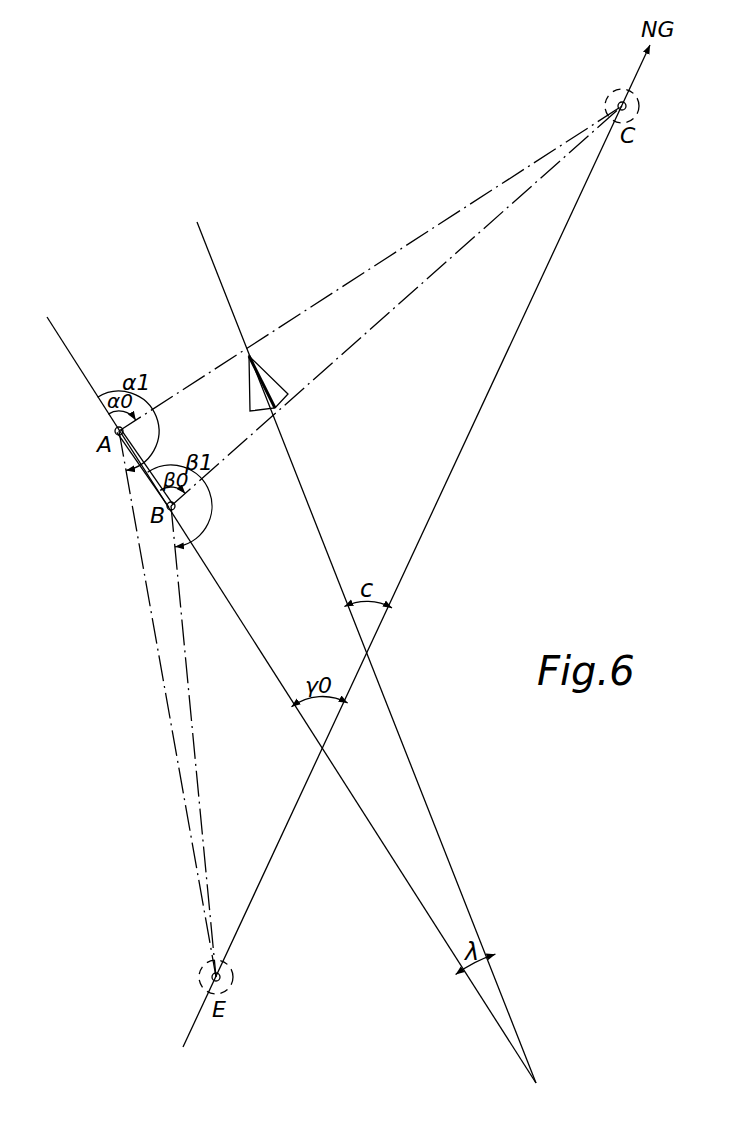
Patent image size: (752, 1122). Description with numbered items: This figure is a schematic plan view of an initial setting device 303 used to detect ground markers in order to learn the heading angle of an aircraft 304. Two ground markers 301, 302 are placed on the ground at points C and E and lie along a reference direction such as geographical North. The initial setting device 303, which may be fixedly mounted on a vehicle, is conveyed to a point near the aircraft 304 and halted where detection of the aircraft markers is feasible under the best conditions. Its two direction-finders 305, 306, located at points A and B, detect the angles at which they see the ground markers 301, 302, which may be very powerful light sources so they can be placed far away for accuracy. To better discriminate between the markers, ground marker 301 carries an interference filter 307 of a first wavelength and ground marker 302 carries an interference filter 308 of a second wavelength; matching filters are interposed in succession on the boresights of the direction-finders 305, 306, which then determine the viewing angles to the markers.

The ground marker 301 is at (635, 110).
The ground marker 302 is at (232, 977).
The initial setting device 303 is at (110, 462).
The aircraft 304 is at (277, 382).
The direction-finder 305 is at (114, 429).
The direction-finder 306 is at (163, 501).
The interference filter 307 is at (608, 96).
The interference filter 308 is at (200, 970).